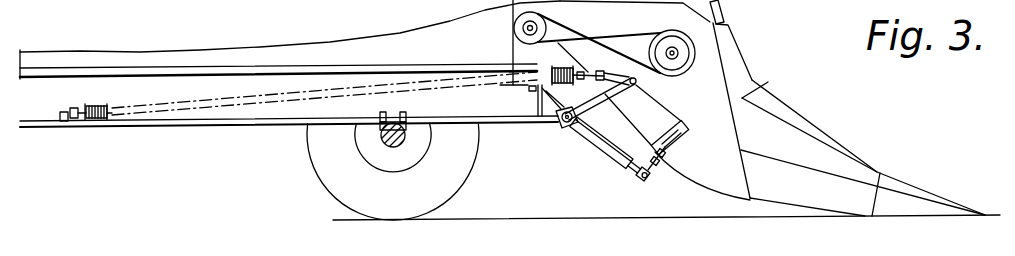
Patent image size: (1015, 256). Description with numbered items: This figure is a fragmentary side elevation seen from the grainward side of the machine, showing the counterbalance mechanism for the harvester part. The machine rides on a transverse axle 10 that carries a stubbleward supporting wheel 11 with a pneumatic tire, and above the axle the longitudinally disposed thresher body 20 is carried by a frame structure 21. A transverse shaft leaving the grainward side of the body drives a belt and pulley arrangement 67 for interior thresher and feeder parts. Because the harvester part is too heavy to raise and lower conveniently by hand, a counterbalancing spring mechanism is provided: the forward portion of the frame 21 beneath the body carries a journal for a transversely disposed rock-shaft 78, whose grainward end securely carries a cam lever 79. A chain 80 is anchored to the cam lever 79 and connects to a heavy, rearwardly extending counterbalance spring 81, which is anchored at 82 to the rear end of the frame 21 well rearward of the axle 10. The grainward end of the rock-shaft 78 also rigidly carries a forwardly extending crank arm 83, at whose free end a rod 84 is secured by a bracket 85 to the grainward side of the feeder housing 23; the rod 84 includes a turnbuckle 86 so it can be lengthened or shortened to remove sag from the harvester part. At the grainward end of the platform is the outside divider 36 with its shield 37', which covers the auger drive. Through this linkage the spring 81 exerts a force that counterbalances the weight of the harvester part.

The thresher body 20 is at (258, 50).
The frame structure 21 is at (232, 127).
The spring anchor 82 is at (70, 110).
The counterbalance spring 81 is at (95, 121).
The stubbleward supporting wheel 11 is at (330, 178).
The transverse axle 10 is at (377, 135).
The belt and pulley arrangement 67 is at (627, 27).
The chain 80 is at (637, 84).
The cam lever 79 is at (611, 96).
The rock-shaft 78 is at (562, 126).
The crank arm 83 is at (604, 152).
The rod 84 is at (638, 178).
The bracket 85 is at (689, 127).
The turnbuckle 86 is at (685, 146).
The feeder housing 23 is at (714, 186).
The shield 37' is at (863, 147).
The outside divider 36 is at (928, 200).